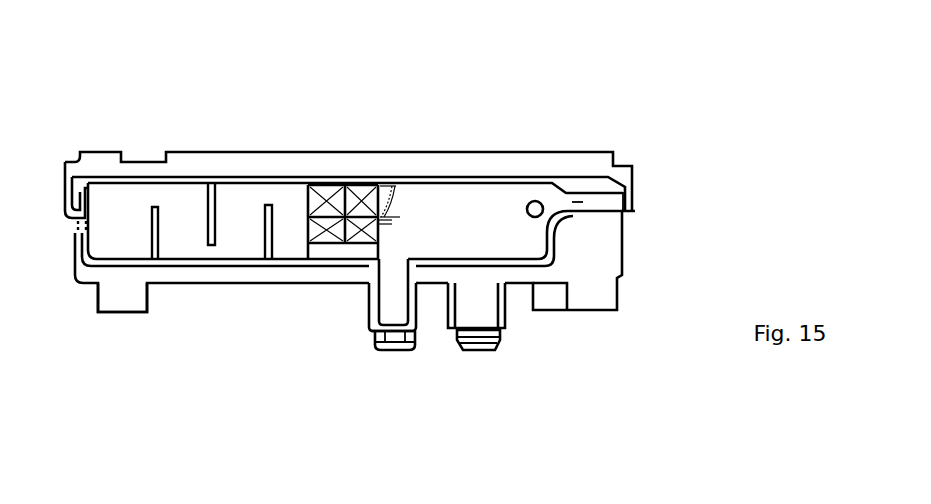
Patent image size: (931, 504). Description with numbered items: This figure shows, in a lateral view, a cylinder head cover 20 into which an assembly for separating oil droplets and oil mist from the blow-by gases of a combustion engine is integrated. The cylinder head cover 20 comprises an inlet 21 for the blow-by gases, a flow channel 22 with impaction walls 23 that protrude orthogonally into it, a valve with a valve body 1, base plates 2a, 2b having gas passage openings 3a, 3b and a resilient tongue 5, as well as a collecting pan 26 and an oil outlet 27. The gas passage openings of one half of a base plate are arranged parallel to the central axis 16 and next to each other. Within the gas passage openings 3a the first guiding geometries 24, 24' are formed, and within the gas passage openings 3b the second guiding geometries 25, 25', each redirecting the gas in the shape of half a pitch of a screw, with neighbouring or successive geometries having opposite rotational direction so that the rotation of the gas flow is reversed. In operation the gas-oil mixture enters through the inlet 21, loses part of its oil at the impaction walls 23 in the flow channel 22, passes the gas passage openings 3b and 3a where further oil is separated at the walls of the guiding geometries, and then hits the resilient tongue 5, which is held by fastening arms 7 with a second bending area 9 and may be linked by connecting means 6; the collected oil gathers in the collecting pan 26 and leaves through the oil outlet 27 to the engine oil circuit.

The valve body 1 is at (306, 228).
The base plate 2a is at (362, 186).
The base plate 2b is at (302, 185).
The gas passage openings 3a is at (350, 192).
The gas passage openings 3b is at (314, 196).
The resilient tongue 5 is at (400, 206).
The connecting means 6 is at (383, 219).
The fastening arms 7 is at (387, 190).
The second bending area 9 is at (396, 196).
The central axis 16 is at (382, 222).
The cylinder head cover 20 is at (206, 154).
The inlet 21 is at (125, 313).
The flow channel 22 is at (184, 217).
The impaction wall 23 is at (270, 240).
The first guiding geometry 24 is at (330, 138).
The first guiding geometry 24' is at (331, 285).
The second guiding geometry 25 is at (379, 116).
The second guiding geometry 25' is at (392, 377).
The collecting pan 26 is at (399, 298).
The oil outlet 27 is at (400, 352).